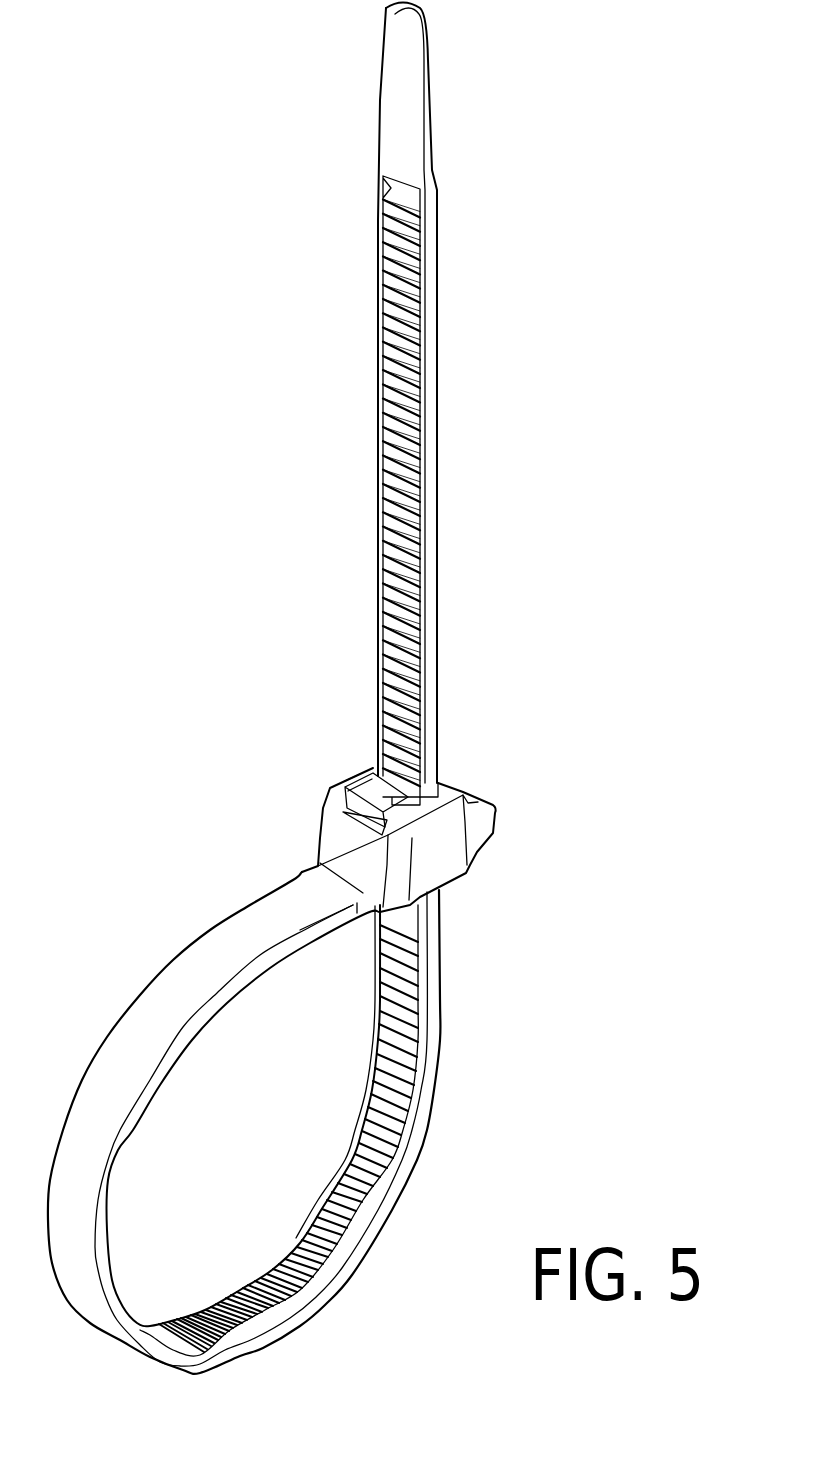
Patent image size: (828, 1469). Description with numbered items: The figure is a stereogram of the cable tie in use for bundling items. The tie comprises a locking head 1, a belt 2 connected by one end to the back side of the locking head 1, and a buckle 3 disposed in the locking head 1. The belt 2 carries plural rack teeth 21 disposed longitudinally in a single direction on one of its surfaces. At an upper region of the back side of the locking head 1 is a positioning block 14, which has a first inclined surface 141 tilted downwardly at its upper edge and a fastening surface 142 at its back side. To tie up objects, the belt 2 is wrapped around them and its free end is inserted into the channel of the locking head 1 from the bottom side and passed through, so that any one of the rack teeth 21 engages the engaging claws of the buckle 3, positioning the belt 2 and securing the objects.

The locking head 1 is at (443, 873).
The belt 2 is at (173, 968).
The rack teeth 21 is at (393, 1108).
The positioning block 14 is at (271, 775).
The first inclined surface 141 is at (350, 785).
The fastening surface 142 is at (360, 827).
The buckle 3 is at (353, 767).